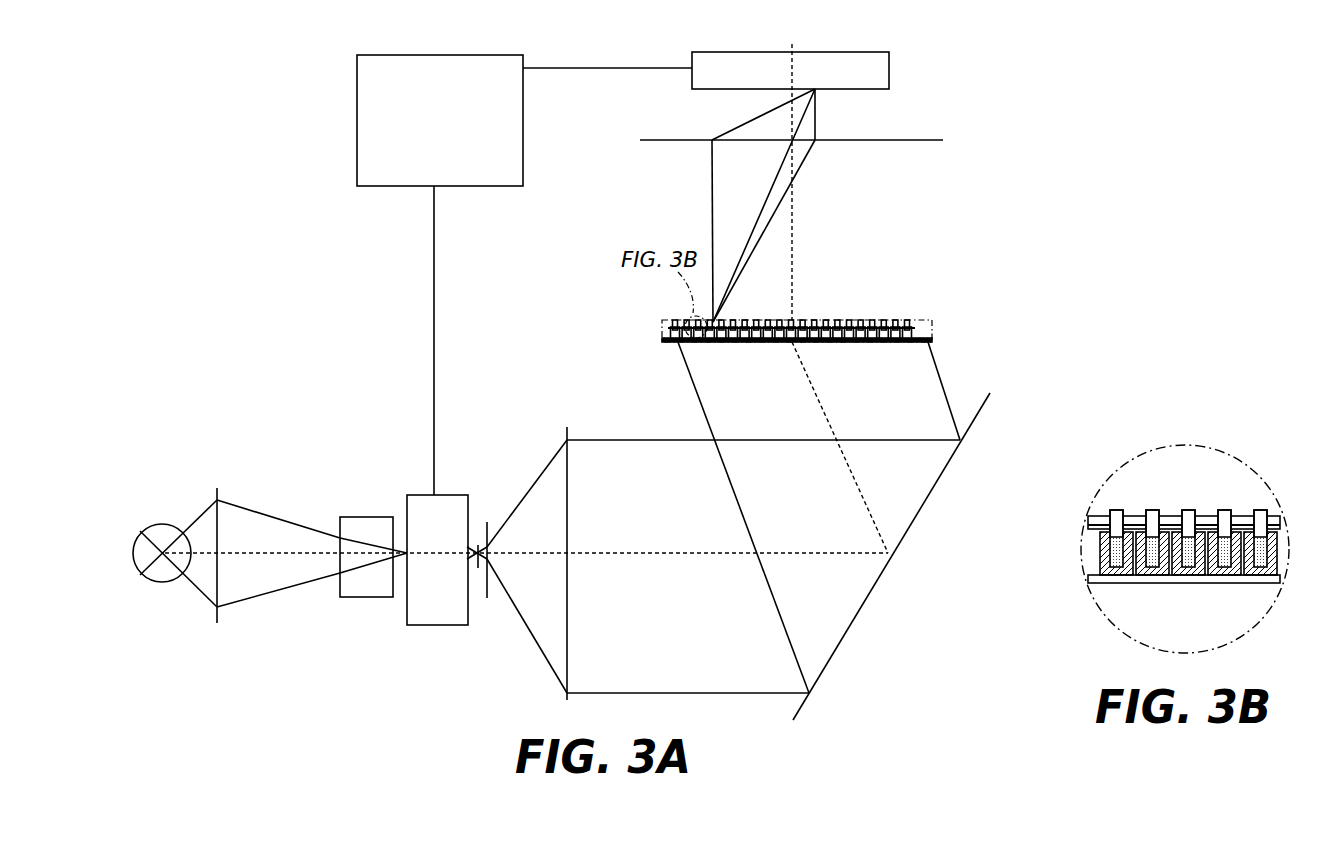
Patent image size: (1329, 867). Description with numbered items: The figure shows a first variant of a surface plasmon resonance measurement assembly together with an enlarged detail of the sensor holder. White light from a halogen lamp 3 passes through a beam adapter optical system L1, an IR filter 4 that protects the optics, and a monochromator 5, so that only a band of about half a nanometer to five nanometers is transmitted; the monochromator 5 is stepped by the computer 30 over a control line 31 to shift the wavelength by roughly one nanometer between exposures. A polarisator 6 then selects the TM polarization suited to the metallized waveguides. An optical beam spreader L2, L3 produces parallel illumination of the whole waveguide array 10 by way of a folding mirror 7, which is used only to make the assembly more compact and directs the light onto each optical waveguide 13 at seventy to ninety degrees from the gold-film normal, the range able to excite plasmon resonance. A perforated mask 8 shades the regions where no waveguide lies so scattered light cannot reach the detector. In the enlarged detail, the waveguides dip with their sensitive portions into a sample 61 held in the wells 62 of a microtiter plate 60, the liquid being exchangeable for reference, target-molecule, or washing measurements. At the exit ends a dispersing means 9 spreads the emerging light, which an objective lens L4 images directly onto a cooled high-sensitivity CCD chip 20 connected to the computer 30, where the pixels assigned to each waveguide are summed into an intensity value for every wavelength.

In FIG. 3A, the halogen lamp 3 is at (165, 572).
In FIG. 3A, the IR filter 4 is at (355, 587).
In FIG. 3A, the monochromator 5 is at (418, 613).
In FIG. 3A, the polarisator 6 is at (478, 568).
In FIG. 3A, the folding mirror 7 is at (873, 588).
In FIG. 3A, the perforated mask 8 is at (867, 342).
In FIG. 3A, the dispersing means 9 is at (800, 320).
In FIG. 3A, the waveguide array 10 is at (897, 320).
In FIG. 3B, the optical waveguide 13 is at (1260, 510).
In FIG. 3A, the CCD chip 20 is at (889, 80).
In FIG. 3A, the computer 30 is at (357, 172).
In FIG. 3A, the control line 31 is at (434, 362).
In FIG. 3B, the microtiter plate 60 is at (1088, 530).
In FIG. 3B, the sample in a well of a microtiter plate 61 is at (1100, 546).
In FIG. 3B, the wells 62 is at (1090, 578).
In FIG. 3A, the beam adapter optical system L1 is at (217, 618).
In FIG. 3A, the optical beam spreader L2 is at (488, 598).
In FIG. 3A, the optical beam spreader L3 is at (568, 592).
In FIG. 3A, the objective lens L4 is at (943, 140).